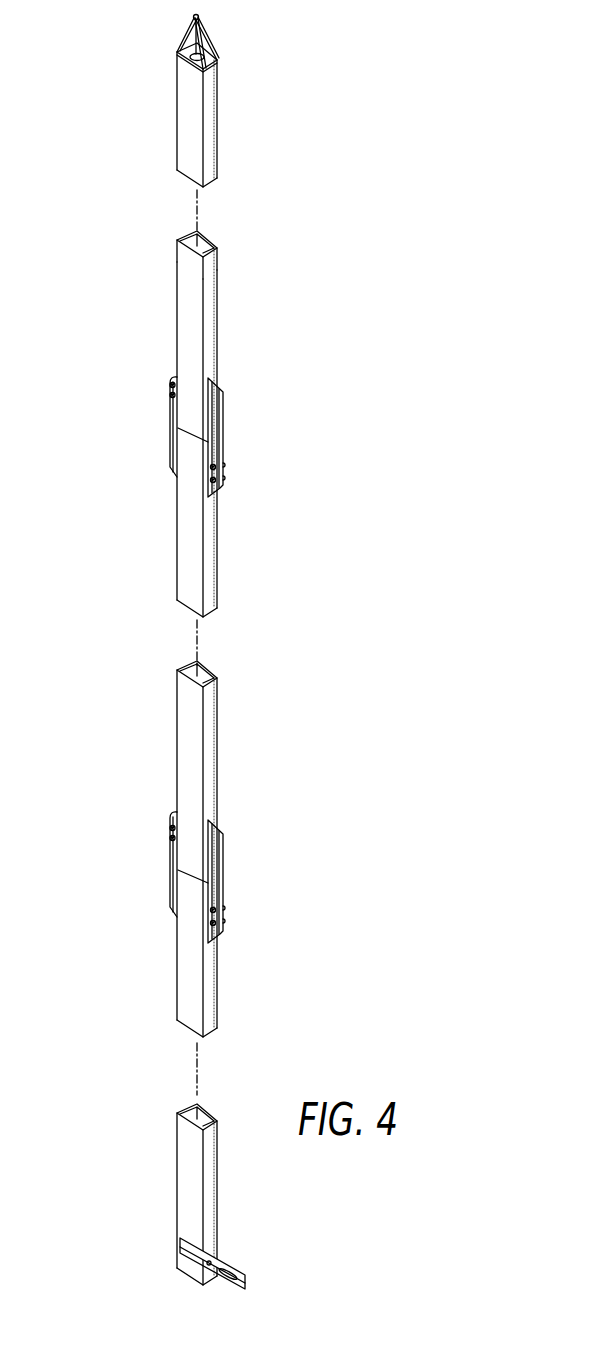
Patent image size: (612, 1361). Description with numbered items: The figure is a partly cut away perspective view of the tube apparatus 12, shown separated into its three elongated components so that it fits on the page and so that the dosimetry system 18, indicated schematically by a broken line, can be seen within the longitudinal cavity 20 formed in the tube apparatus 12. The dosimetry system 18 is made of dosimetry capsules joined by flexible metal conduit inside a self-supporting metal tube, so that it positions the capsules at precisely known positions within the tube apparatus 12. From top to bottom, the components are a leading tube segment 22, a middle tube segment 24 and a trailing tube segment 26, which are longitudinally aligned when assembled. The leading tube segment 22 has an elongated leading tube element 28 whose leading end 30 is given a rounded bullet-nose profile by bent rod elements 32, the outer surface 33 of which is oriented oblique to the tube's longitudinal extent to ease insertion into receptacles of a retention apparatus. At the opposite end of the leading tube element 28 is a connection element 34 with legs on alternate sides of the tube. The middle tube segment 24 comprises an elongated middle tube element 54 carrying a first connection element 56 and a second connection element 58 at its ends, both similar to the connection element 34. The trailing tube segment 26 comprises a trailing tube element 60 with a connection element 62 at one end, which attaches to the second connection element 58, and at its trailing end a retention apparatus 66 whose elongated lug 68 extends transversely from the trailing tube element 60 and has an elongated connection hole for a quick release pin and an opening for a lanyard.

The tube apparatus 12 is at (226, 750).
The dosimetry system 18 is at (198, 205).
The longitudinal cavity 20 is at (205, 248).
The leading tube segment 22 is at (239, 414).
The middle tube segment 24 is at (240, 792).
The trailing tube segment 26 is at (231, 946).
The leading tube element 28 is at (229, 245).
The leading end 30 is at (215, 97).
The bent rod elements 32 is at (210, 35).
The outer surface 33 is at (180, 35).
The connection element 34 is at (197, 374).
The middle tube element 54 is at (218, 532).
The first connection element 56 is at (240, 411).
The second connection element 58 is at (198, 818).
The trailing tube element 60 is at (218, 1007).
The connection element 62 is at (243, 842).
The retention apparatus 66 is at (254, 1243).
The elongated lug 68 is at (227, 1262).